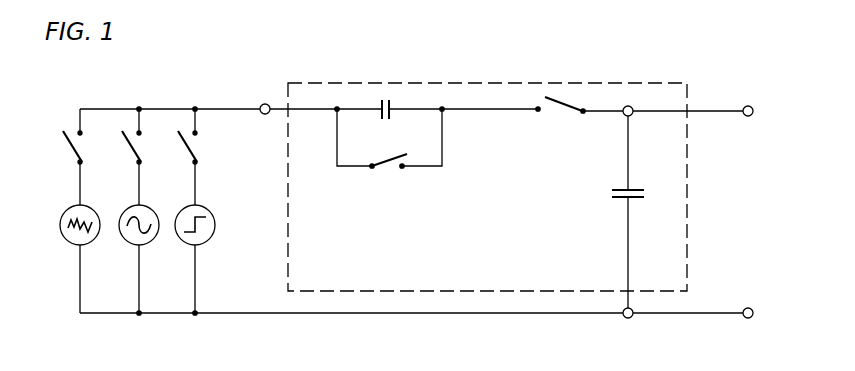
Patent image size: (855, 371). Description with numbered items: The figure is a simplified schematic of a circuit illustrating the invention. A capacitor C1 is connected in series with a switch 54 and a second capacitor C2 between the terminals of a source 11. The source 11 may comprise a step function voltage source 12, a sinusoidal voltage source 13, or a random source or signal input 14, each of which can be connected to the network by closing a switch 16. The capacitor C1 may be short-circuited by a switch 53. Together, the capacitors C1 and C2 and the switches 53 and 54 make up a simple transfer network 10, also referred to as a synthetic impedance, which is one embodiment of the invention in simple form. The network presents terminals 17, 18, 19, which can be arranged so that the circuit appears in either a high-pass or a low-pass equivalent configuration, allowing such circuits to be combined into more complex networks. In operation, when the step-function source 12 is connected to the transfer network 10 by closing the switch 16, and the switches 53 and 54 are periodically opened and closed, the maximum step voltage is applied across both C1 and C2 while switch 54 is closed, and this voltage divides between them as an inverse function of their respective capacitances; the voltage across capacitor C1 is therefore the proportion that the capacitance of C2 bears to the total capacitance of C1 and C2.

The transfer network 10 is at (488, 86).
The source 11 is at (129, 226).
The step function voltage source 12 is at (215, 221).
The sinusoidal voltage source 13 is at (147, 243).
The random source or signal input 14 is at (88, 243).
The switch 16 is at (188, 142).
The terminal 17 is at (752, 107).
The terminal 18 is at (630, 318).
The terminal 19 is at (264, 104).
The capacitor C1 is at (392, 105).
The second capacitor C2 is at (610, 194).
The switch 53 is at (388, 168).
The switch 54 is at (553, 106).